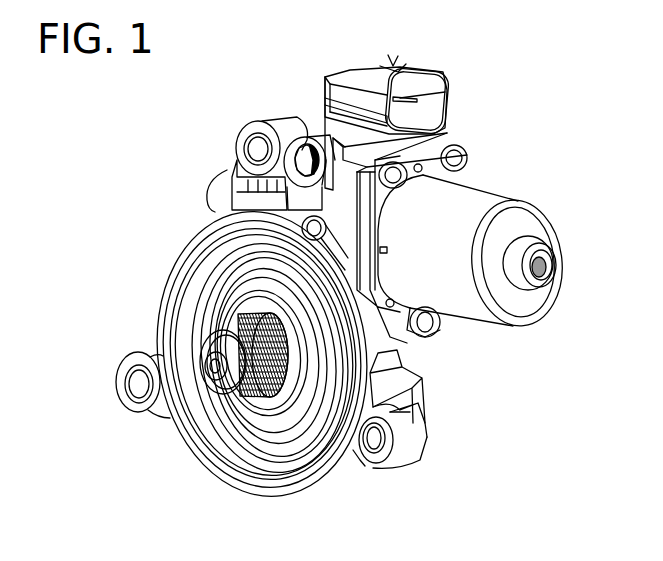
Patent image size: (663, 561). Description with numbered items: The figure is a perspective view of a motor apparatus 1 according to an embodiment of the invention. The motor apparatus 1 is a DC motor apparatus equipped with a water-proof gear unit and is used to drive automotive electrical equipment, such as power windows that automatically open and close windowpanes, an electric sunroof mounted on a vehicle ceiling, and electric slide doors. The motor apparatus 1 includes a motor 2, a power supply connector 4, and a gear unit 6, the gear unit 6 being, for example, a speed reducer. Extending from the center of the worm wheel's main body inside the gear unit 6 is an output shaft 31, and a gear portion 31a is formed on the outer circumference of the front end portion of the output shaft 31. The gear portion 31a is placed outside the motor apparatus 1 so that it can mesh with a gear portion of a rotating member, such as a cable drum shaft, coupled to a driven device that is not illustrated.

The motor apparatus 1 is at (483, 72).
The motor 2 is at (503, 192).
The power supply connector 4 is at (391, 63).
The gear unit 6 is at (182, 245).
The output shaft 31 is at (240, 395).
The gear portion 31a is at (252, 397).